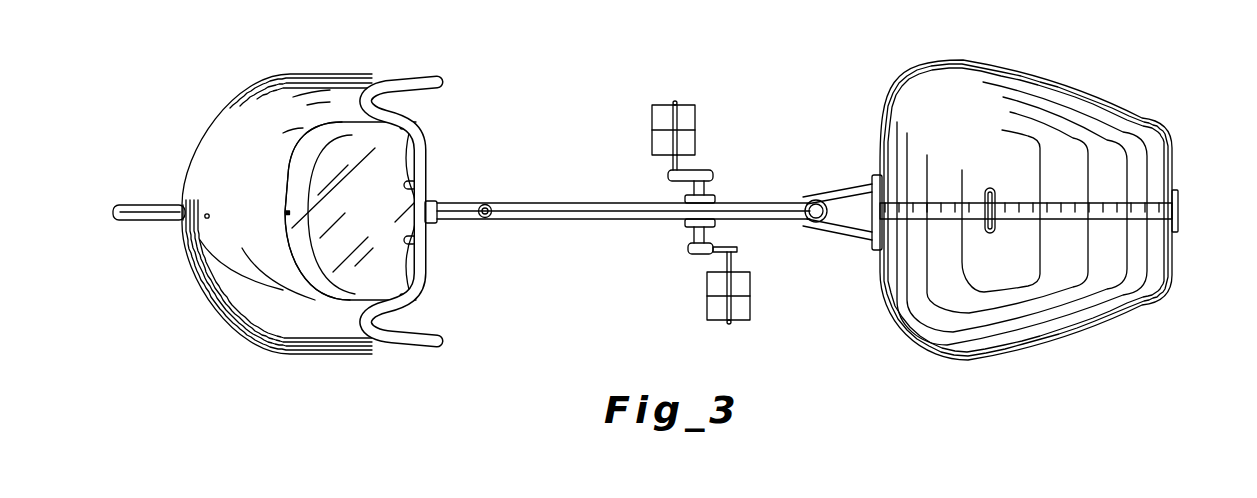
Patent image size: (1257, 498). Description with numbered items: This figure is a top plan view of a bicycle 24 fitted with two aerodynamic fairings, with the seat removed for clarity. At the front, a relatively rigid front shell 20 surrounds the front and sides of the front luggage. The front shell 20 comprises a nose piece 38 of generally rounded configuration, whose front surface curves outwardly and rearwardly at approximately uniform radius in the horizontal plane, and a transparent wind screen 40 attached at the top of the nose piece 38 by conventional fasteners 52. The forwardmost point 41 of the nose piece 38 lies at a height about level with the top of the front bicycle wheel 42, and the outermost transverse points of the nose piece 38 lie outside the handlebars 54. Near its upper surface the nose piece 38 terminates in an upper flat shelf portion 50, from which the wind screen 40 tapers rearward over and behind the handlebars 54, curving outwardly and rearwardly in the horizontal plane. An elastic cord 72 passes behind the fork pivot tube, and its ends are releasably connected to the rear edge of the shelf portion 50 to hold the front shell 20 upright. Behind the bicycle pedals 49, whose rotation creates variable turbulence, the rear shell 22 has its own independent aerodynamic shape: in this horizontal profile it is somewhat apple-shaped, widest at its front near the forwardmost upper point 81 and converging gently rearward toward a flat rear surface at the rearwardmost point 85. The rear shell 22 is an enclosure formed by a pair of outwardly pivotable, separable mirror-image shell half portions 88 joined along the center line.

The front shell 20 is at (276, 220).
The rear shell 22 is at (1068, 231).
The bicycle 24 is at (568, 214).
The nose piece 38 is at (233, 301).
The wind screen 40 is at (397, 162).
The forwardmost point 41 is at (169, 221).
The front bicycle wheel 42 is at (132, 205).
The bicycle pedals 49 is at (697, 118).
The shelf portion 50 is at (331, 278).
The fasteners 52 is at (288, 214).
The handlebars 54 is at (430, 273).
The elastic cord 72 is at (417, 185).
The forwardmost upper point 81 is at (873, 213).
The rearwardmost point 85 is at (1206, 211).
The shell half portions 88 is at (1078, 105).